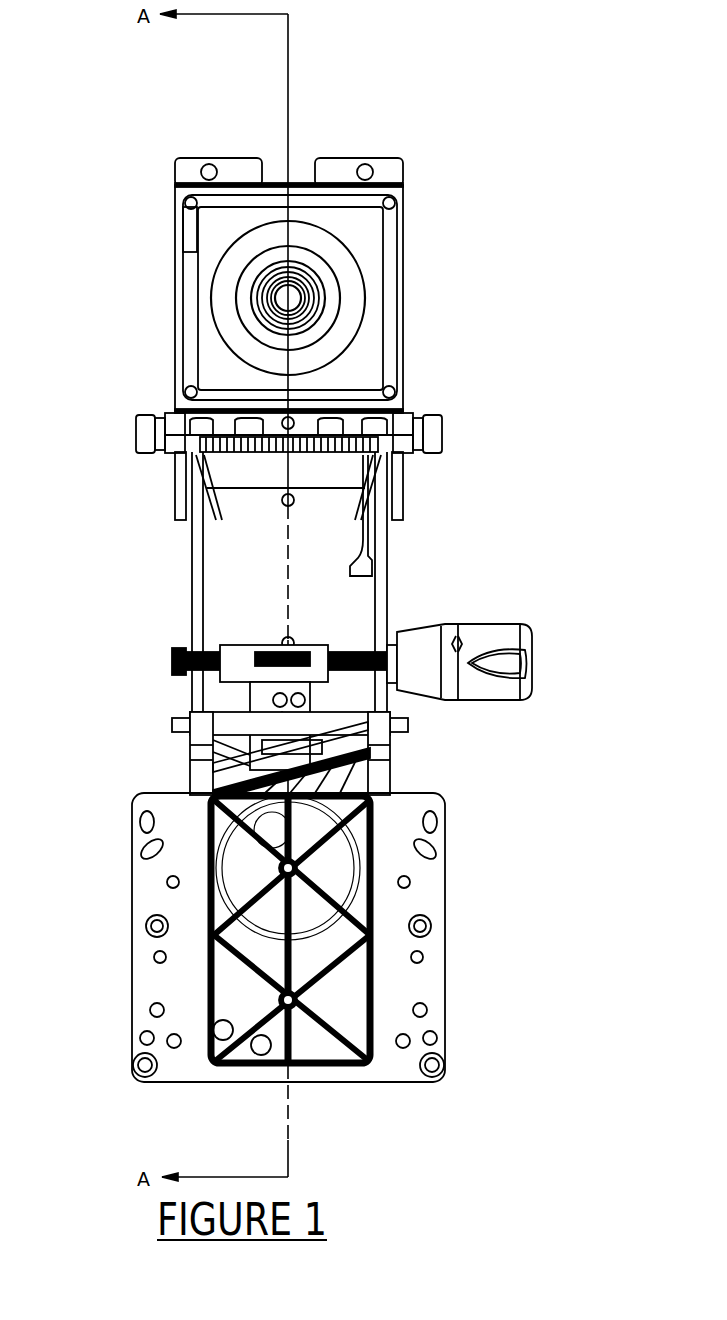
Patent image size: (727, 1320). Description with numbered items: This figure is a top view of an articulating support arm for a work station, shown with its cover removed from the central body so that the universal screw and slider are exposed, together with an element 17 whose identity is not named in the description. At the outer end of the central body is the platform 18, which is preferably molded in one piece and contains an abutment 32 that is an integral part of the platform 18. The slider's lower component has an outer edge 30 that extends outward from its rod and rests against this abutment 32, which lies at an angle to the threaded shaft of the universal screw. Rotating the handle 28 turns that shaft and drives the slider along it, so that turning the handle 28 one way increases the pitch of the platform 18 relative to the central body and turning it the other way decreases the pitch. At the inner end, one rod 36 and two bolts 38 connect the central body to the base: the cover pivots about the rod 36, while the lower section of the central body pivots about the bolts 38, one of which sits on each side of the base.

The housing 17 is at (178, 252).
The platform 18 is at (450, 985).
The handle 28 is at (536, 681).
The outer edge 30 is at (245, 750).
The abutment 32 is at (370, 762).
The rod 36 is at (150, 416).
The bolts 38 is at (136, 432).